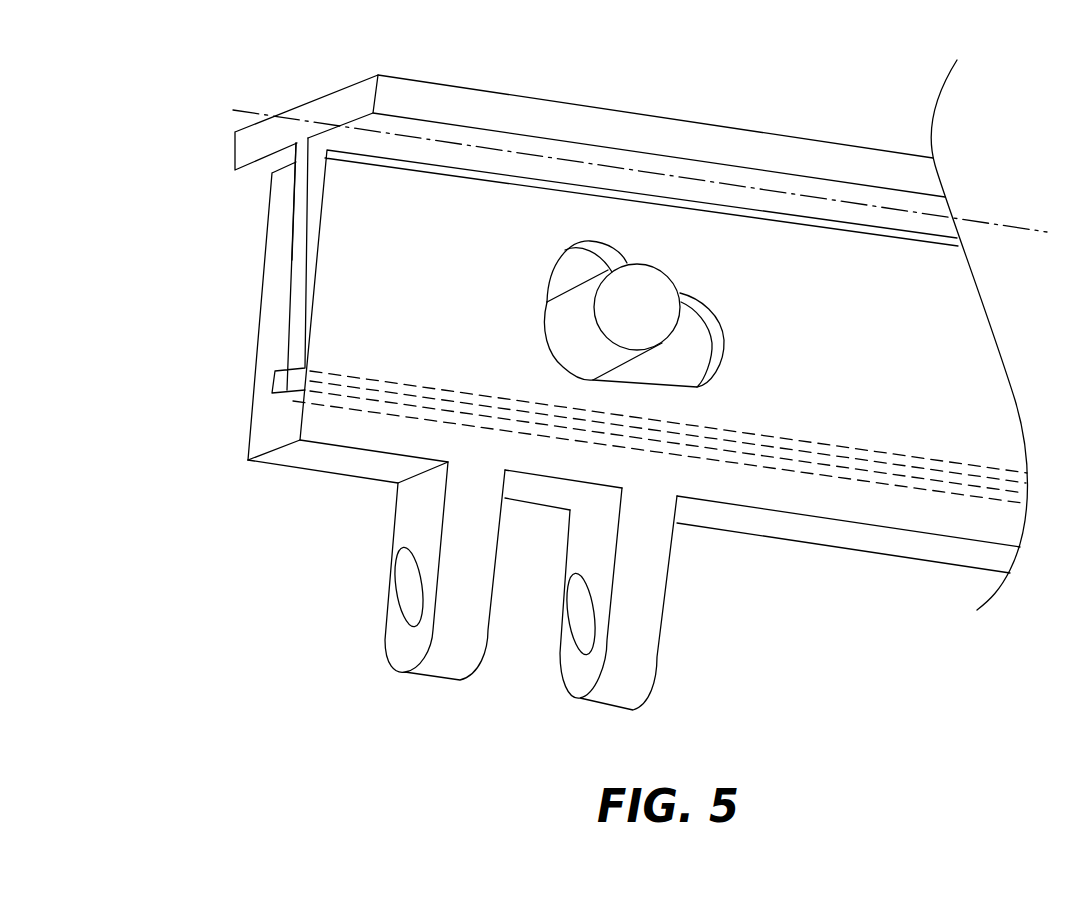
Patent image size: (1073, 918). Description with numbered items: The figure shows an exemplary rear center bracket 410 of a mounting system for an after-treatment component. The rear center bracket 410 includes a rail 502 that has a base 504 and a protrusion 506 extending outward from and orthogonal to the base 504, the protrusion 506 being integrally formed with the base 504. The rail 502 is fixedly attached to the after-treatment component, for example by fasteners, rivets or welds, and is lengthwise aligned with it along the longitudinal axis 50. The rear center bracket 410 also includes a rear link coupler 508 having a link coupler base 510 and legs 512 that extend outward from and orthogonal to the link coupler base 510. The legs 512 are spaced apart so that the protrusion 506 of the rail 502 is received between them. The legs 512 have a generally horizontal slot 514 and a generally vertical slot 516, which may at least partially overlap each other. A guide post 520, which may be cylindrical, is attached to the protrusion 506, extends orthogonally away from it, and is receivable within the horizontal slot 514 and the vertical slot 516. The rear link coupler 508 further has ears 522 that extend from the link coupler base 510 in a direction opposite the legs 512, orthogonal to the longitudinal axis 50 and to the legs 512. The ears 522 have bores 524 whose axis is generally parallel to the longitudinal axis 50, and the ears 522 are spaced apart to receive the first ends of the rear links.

The rear center bracket 410 is at (148, 77).
The longitudinal axis 50 is at (977, 220).
The rail 502 is at (513, 103).
The base 504 is at (342, 105).
The protrusion 506 is at (297, 186).
The rear link coupler 508 is at (947, 342).
The link coupler base 510 is at (343, 432).
The legs 512 is at (300, 258).
The horizontal slot 514 is at (702, 352).
The vertical slot 516 is at (573, 267).
The guide post 520 is at (648, 298).
The ears 522 is at (418, 500).
The bores 524 is at (410, 588).